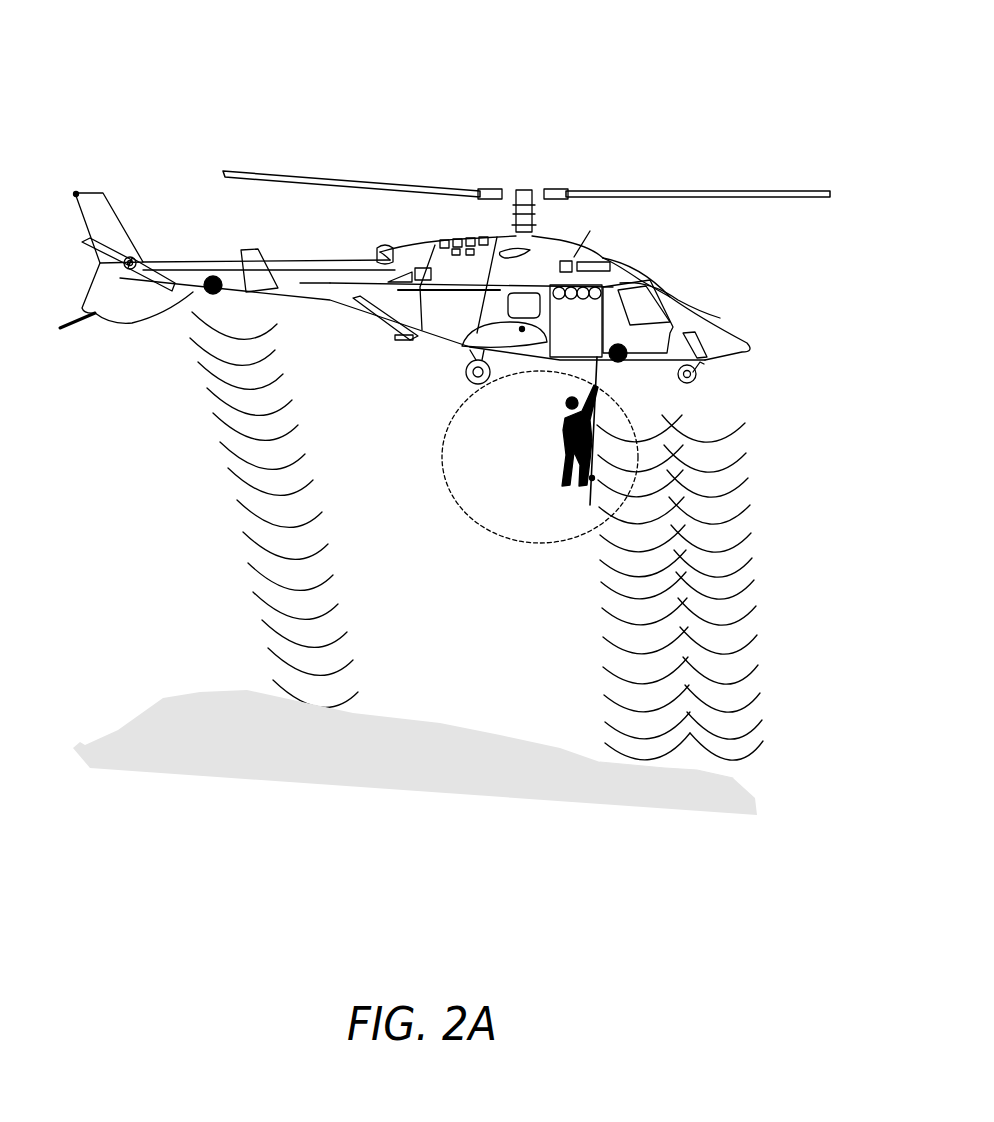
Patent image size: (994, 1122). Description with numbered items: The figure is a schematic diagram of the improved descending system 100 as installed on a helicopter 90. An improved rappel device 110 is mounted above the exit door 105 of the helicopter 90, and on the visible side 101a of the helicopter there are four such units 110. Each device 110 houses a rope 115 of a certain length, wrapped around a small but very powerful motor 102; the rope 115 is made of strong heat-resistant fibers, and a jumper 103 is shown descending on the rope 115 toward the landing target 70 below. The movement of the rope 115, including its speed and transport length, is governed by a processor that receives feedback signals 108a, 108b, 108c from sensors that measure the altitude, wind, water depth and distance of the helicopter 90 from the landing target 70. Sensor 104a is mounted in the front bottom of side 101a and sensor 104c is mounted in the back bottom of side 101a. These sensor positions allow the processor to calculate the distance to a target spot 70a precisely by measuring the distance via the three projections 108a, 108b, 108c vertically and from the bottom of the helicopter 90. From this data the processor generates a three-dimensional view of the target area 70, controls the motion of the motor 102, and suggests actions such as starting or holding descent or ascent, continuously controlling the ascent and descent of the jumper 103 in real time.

The rescue system 100 is at (198, 52).
The helicopter 90 is at (347, 258).
The side of the helicopter 101a is at (313, 295).
The motor 102 is at (580, 253).
The sensor 104a is at (625, 362).
The sensor 104c is at (207, 277).
The rappel device 110 is at (576, 321).
The rope 115 is at (595, 372).
The jumper 103 is at (562, 433).
The exit door 105 is at (470, 363).
The feedback signal 108a is at (600, 609).
The feedback signal 108b is at (735, 458).
The feedback signal 108c is at (225, 422).
The landing target 70 is at (185, 727).
The target spot 70a is at (632, 772).